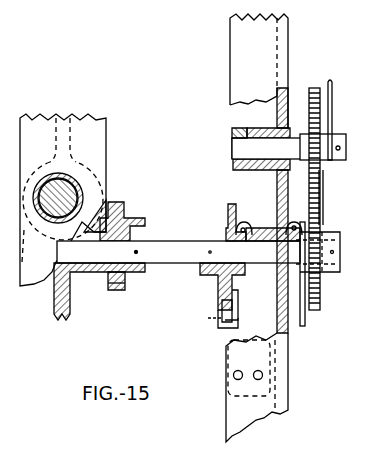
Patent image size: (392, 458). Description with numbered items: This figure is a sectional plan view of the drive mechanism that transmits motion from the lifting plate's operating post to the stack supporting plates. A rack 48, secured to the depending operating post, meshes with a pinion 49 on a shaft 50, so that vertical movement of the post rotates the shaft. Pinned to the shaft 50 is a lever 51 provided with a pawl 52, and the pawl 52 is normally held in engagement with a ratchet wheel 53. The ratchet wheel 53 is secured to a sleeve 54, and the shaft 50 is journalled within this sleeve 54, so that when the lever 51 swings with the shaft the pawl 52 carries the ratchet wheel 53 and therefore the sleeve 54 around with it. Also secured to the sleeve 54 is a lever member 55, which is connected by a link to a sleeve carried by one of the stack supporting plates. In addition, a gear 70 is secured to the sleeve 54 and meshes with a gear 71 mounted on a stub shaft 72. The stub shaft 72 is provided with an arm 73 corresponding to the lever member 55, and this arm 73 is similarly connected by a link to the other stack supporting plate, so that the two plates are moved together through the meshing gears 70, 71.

The rack 48 is at (118, 202).
The pinion 49 is at (116, 290).
The shaft 50 is at (186, 264).
The lever 51 is at (222, 278).
The pawl 52 is at (224, 324).
The ratchet wheel 53 is at (230, 212).
The sleeve 54 is at (266, 228).
The lever member 55 is at (306, 320).
The gear 70 is at (326, 272).
The gear 71 is at (314, 90).
The stub shaft 72 is at (240, 151).
The arm 73 is at (333, 100).